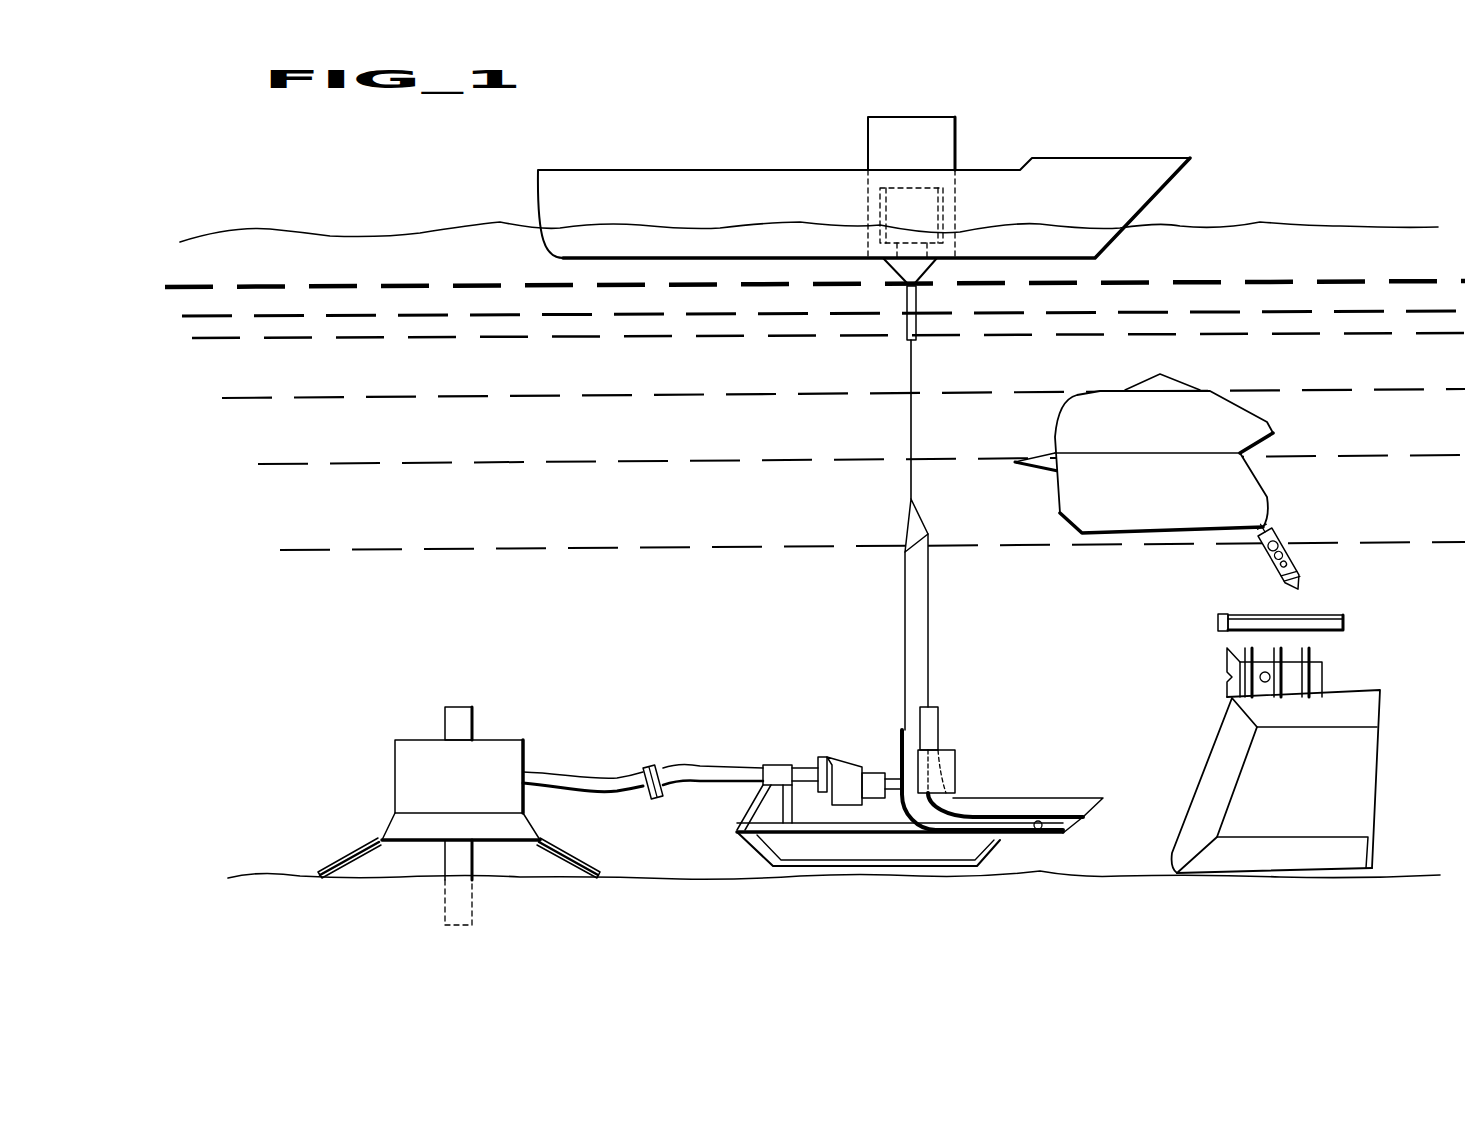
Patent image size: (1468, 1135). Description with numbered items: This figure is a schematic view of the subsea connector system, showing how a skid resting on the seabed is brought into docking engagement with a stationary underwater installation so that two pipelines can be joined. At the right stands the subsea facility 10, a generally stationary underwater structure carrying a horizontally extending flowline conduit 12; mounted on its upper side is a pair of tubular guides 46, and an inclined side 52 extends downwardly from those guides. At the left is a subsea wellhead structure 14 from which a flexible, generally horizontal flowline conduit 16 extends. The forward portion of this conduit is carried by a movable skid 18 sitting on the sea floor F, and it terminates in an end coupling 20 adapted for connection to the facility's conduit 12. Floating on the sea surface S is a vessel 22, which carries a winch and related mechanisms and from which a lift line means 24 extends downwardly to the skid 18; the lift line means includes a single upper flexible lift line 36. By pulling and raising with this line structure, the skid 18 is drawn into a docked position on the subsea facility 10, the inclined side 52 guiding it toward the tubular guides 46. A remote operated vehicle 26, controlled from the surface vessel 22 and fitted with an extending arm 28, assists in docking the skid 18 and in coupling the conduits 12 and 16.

The subsea facility 10 is at (1282, 745).
The flowline conduit 12 is at (1315, 617).
The subsea wellhead structure 14 is at (390, 718).
The flexible flowline conduit 16 is at (710, 770).
The movable skid 18 is at (841, 750).
The end coupling 20 is at (955, 757).
The vessel 22 is at (1074, 126).
The lift line means 24 is at (901, 398).
The remote operated vehicle 26 is at (1258, 398).
The extending arm 28 is at (1275, 540).
The upper lift line 36 is at (911, 462).
The tubular guides 46 is at (1290, 703).
The inclined side 52 is at (1195, 788).
The sea surface S is at (1193, 226).
The sea floor F is at (1068, 878).